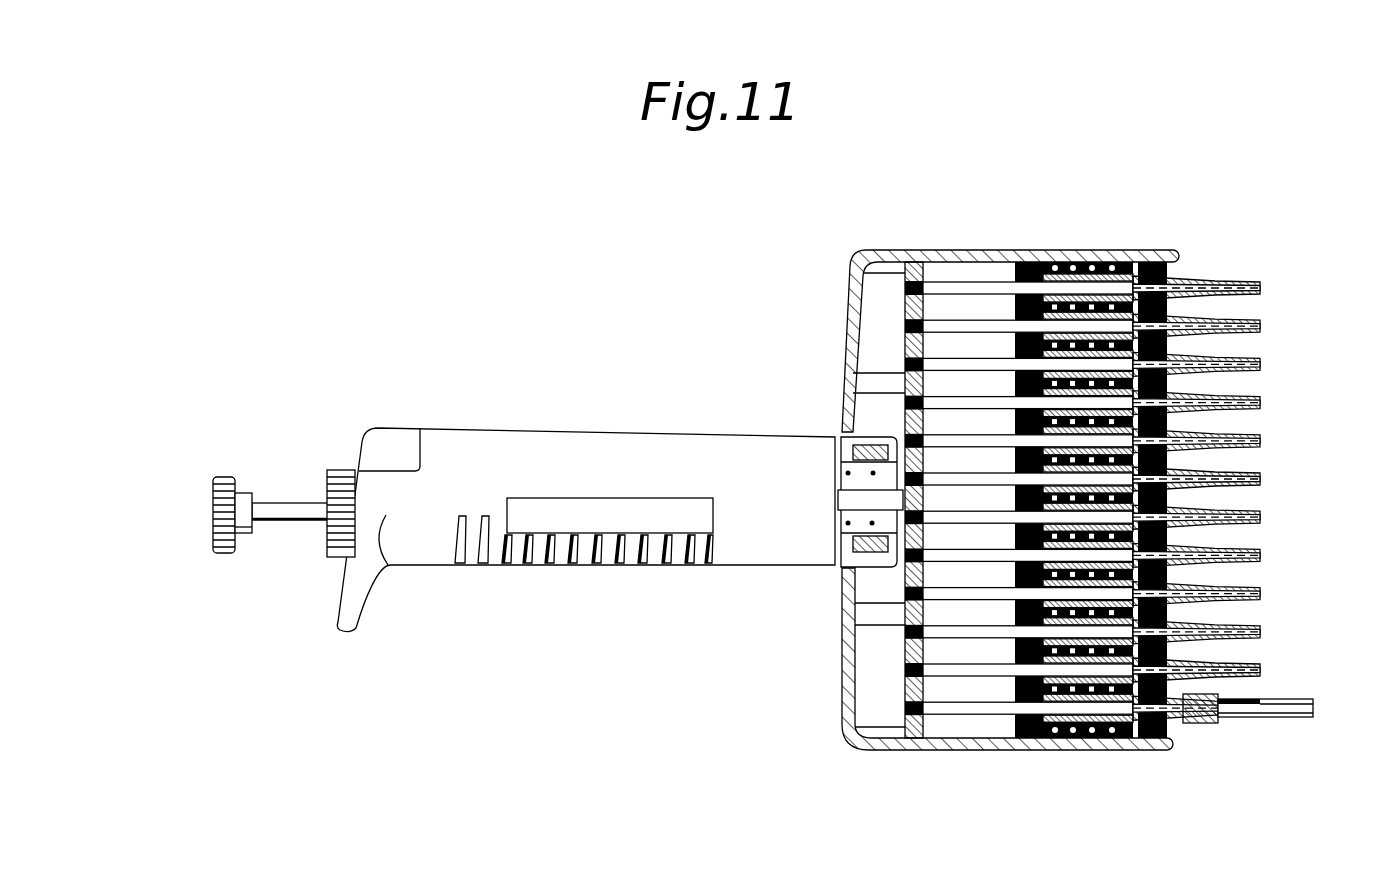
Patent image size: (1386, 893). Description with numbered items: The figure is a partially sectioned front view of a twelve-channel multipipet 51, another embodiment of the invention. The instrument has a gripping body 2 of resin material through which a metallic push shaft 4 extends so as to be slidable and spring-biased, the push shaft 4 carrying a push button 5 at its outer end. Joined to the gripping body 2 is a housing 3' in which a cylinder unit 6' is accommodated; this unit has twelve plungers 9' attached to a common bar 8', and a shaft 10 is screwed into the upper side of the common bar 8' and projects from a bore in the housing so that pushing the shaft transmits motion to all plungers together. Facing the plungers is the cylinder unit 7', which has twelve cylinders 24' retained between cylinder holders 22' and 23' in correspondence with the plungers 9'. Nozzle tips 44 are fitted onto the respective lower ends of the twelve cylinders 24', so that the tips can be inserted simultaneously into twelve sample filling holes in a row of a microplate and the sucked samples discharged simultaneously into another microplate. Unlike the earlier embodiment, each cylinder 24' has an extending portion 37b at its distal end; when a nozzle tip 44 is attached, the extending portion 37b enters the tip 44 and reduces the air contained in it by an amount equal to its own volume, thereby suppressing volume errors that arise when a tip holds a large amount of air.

The gripping body 2 is at (590, 432).
The housing 3' is at (1004, 478).
The push shaft 4 is at (288, 503).
The push button 5 is at (226, 477).
The cylinder unit (plunger unit) 6' is at (922, 451).
The cylinder unit 7' is at (1102, 449).
The common bar 8' is at (932, 472).
The plungers 9' is at (1028, 460).
The shaft 10 is at (863, 497).
The cylinder holder 22' is at (1048, 473).
The cylinder holder 23' is at (1164, 473).
The cylinders 24' is at (1090, 473).
The extending portion 37b is at (1224, 286).
The nozzle tip 44 is at (1204, 726).
The 12-channel multipipet 51 is at (746, 284).